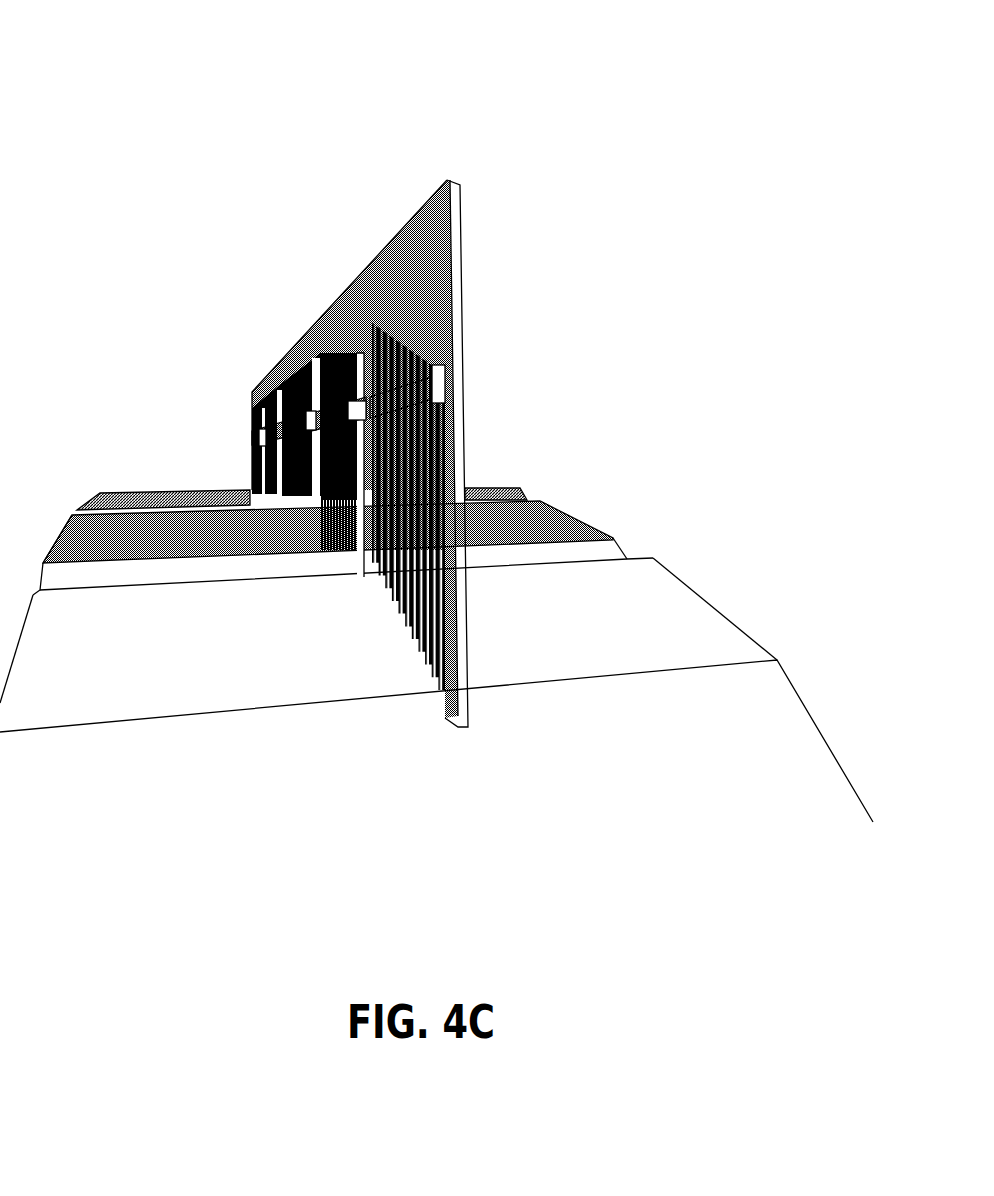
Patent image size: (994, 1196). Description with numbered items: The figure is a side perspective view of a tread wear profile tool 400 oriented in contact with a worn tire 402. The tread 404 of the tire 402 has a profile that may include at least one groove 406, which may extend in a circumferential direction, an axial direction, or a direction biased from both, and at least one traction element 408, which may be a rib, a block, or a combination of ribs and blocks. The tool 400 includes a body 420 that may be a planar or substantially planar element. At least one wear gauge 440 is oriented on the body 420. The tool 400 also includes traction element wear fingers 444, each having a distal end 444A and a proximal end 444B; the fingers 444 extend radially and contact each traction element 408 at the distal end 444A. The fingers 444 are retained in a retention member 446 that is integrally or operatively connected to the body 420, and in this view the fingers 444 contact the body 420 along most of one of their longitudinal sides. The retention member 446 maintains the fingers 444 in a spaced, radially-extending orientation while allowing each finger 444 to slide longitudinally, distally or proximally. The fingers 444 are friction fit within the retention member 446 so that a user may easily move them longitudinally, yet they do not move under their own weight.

The tread wear profile tool 400 is at (166, 126).
The tire 402 is at (713, 642).
The tread 404 is at (625, 527).
The groove 406 is at (205, 580).
The traction element 408 is at (336, 650).
The body 420 is at (455, 200).
The wear gauge 440 is at (260, 380).
The traction element wear finger 444 is at (423, 358).
The distal end 444A is at (340, 522).
The proximal end 444B is at (337, 360).
The retention member 446 is at (436, 390).